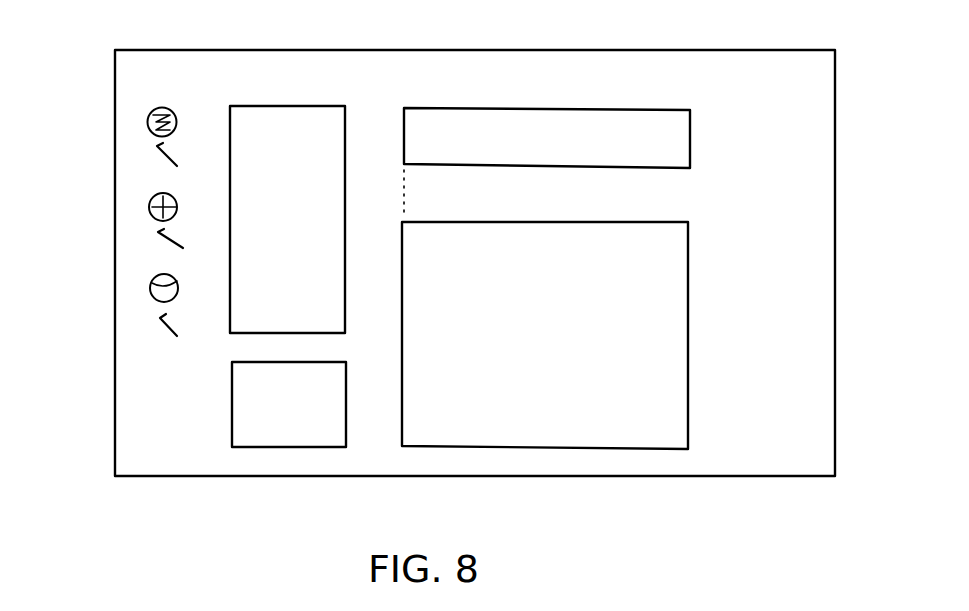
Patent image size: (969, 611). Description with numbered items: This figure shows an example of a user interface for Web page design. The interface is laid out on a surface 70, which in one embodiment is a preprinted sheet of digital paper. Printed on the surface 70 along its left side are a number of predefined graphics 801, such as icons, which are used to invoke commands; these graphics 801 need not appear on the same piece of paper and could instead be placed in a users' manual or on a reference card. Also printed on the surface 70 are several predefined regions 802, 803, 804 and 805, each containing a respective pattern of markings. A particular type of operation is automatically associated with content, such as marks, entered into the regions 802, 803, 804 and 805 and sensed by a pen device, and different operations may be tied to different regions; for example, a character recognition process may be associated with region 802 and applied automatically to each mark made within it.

The surface 70 is at (797, 98).
The predefined graphics 801 is at (105, 109).
The predefined region 802 is at (314, 165).
The predefined region 803 is at (309, 412).
The predefined region 804 is at (562, 150).
The predefined region 805 is at (560, 336).